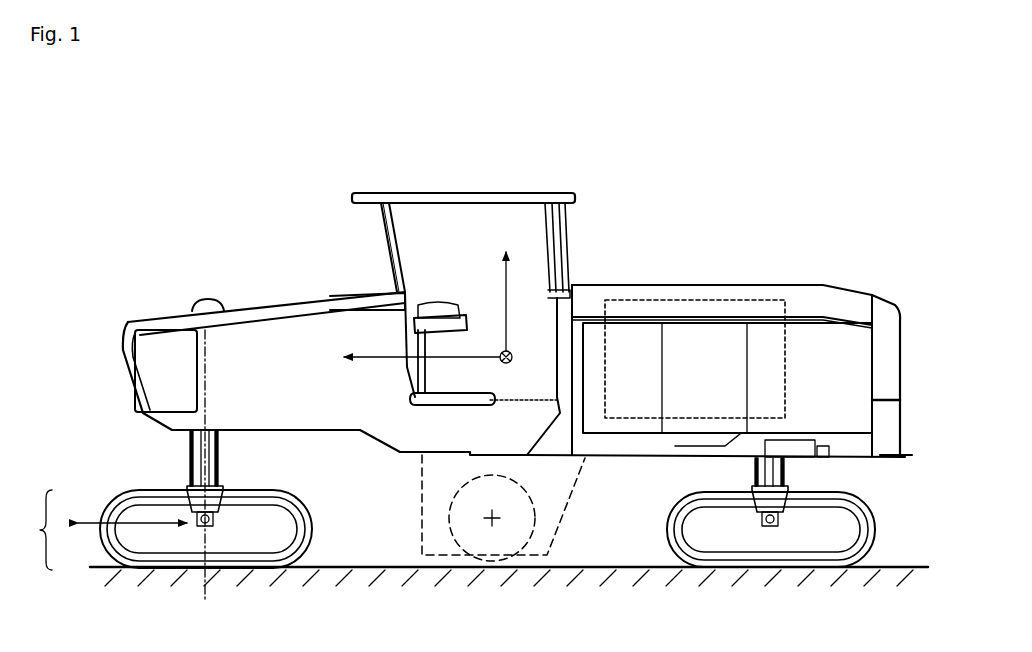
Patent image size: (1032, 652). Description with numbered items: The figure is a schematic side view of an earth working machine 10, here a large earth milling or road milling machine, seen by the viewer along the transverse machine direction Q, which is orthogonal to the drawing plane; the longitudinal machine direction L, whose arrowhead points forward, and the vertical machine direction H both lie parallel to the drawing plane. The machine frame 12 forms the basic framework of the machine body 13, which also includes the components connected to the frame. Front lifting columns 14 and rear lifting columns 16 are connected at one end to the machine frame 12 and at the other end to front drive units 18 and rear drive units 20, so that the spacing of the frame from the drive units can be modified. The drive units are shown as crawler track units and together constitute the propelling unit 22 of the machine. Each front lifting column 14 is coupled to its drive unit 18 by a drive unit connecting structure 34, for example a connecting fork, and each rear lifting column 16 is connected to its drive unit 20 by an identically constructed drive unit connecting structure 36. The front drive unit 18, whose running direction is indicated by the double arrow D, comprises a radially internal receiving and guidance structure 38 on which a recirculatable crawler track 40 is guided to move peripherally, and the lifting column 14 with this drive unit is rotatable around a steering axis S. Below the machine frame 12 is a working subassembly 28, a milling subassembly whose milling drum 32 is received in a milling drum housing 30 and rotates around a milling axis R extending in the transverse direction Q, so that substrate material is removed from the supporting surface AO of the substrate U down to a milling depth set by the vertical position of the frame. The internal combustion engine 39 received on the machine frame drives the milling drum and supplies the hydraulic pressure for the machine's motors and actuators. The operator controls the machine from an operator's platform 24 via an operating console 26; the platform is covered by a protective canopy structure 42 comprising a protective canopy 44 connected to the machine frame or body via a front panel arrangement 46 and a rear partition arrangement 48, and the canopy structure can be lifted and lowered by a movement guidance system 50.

The earth working machine 10 is at (768, 159).
The machine frame 12 is at (517, 344).
The machine body 13 is at (804, 294).
The front lifting columns 14 is at (218, 458).
The rear lifting columns 16 is at (783, 466).
The front drive units 18 is at (227, 506).
The rear drive units 20 is at (876, 505).
The propelling unit 22 is at (35, 530).
The operator's platform 24 is at (463, 165).
The operating console 26 is at (448, 315).
The working subassembly 28 is at (491, 507).
The milling drum housing 30 is at (572, 502).
The milling drum 32 is at (507, 476).
The drive unit connecting structure 34 is at (190, 489).
The drive unit connecting structure 36 is at (758, 490).
The receiving and guidance structure 38 is at (278, 543).
The internal combustion engine 39 is at (695, 299).
The crawler track 40 is at (300, 495).
The protective canopy structure 42 is at (469, 213).
The protective canopy 44 is at (424, 195).
The front panel arrangement 46 is at (368, 252).
The rear partition arrangement 48 is at (592, 244).
The movement guidance system 50 is at (532, 224).
The steering axis S is at (212, 374).
The running direction D is at (96, 521).
The substrate U is at (606, 566).
The supporting surface AO is at (368, 566).
The milling axis R is at (494, 518).
The transverse machine direction Q is at (510, 364).
The longitudinal machine direction L is at (369, 356).
The vertical machine direction H is at (511, 290).